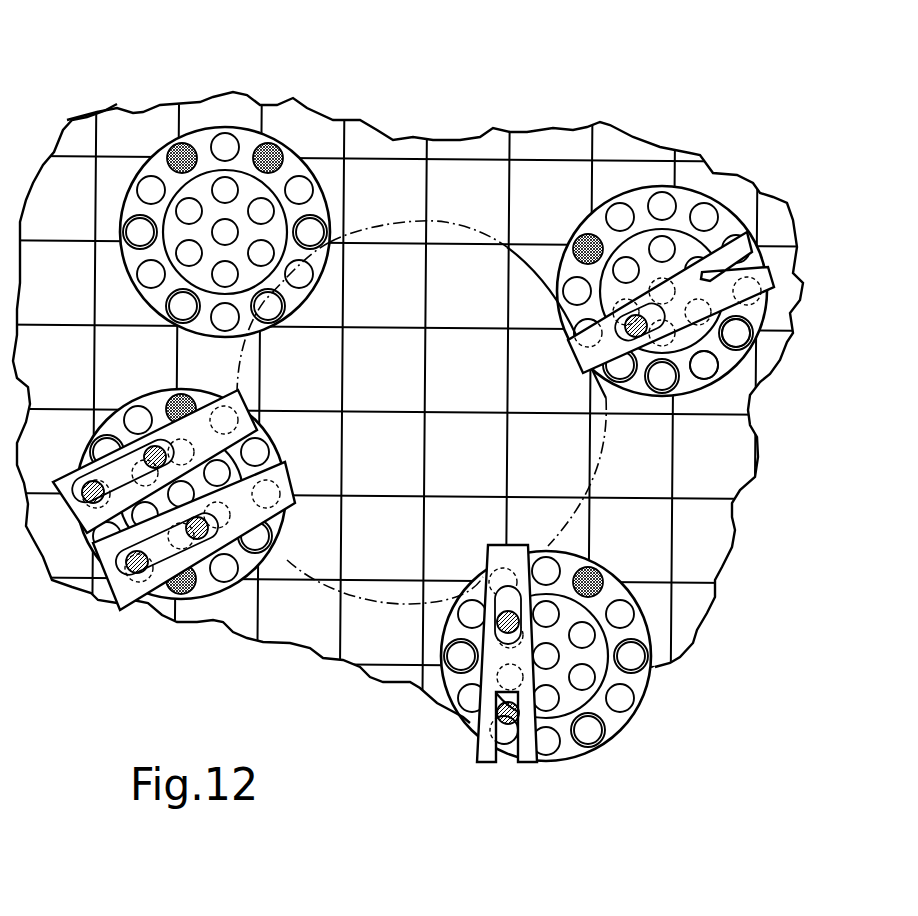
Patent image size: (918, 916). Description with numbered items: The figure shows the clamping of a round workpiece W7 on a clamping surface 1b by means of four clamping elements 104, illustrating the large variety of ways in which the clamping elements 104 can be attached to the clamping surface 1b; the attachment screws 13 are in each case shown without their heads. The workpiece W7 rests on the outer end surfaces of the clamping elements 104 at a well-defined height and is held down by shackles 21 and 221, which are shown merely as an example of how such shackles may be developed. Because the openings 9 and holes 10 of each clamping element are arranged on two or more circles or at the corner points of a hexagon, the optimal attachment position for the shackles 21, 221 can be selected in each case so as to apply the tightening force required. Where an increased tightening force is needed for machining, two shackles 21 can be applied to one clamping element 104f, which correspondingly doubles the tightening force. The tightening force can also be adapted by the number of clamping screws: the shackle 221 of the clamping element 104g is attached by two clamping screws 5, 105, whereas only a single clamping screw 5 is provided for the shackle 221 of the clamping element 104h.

The clamping surface 1b is at (493, 127).
The round workpiece W7 is at (458, 218).
The clamping element 104 is at (211, 125).
The clamping element 104h is at (637, 185).
The clamping element 104g is at (648, 705).
The clamping element 104f is at (222, 622).
The attachment screw 13 is at (193, 150).
The shackle 21 is at (62, 548).
The shackle 221 is at (747, 237).
The clamping screw 105 is at (513, 762).
The clamping screw 5 is at (639, 340).
The opening 9 is at (740, 333).
The hole 10 is at (706, 365).